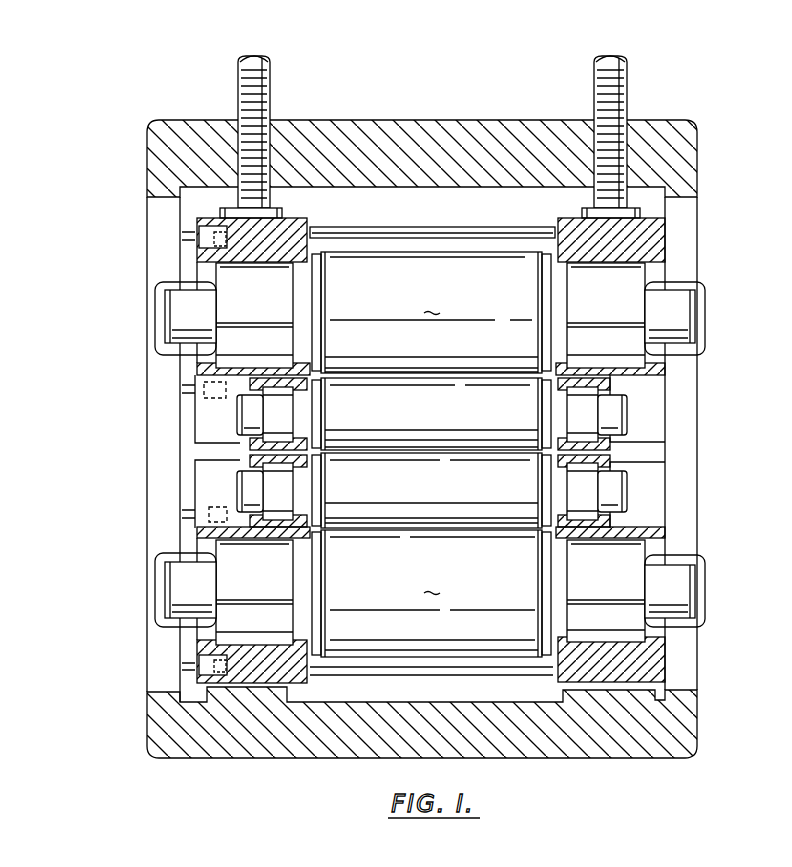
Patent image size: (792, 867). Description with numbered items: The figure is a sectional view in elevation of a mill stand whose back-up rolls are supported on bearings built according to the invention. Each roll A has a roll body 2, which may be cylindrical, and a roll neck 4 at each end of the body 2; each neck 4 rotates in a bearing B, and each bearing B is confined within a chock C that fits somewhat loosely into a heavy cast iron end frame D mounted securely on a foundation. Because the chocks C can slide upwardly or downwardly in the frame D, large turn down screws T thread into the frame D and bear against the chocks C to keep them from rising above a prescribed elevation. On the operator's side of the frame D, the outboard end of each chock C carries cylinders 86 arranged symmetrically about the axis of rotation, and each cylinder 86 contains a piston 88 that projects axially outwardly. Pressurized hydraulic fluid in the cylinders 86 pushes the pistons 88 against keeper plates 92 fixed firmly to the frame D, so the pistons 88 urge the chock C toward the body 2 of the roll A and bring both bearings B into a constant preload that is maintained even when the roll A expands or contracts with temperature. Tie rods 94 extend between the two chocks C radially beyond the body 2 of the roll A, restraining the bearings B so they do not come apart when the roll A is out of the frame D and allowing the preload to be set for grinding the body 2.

The turn down screw T is at (272, 88).
The end frame D is at (699, 149).
The chock C is at (200, 258).
The bearing B is at (222, 298).
The roll body 2 is at (431, 454).
The roll neck 4 is at (310, 300).
The roll A is at (458, 257).
The tie rod 94 is at (372, 232).
The keeper plate 92 is at (157, 368).
The cylinder 86 is at (222, 230).
The piston 88 is at (205, 237).